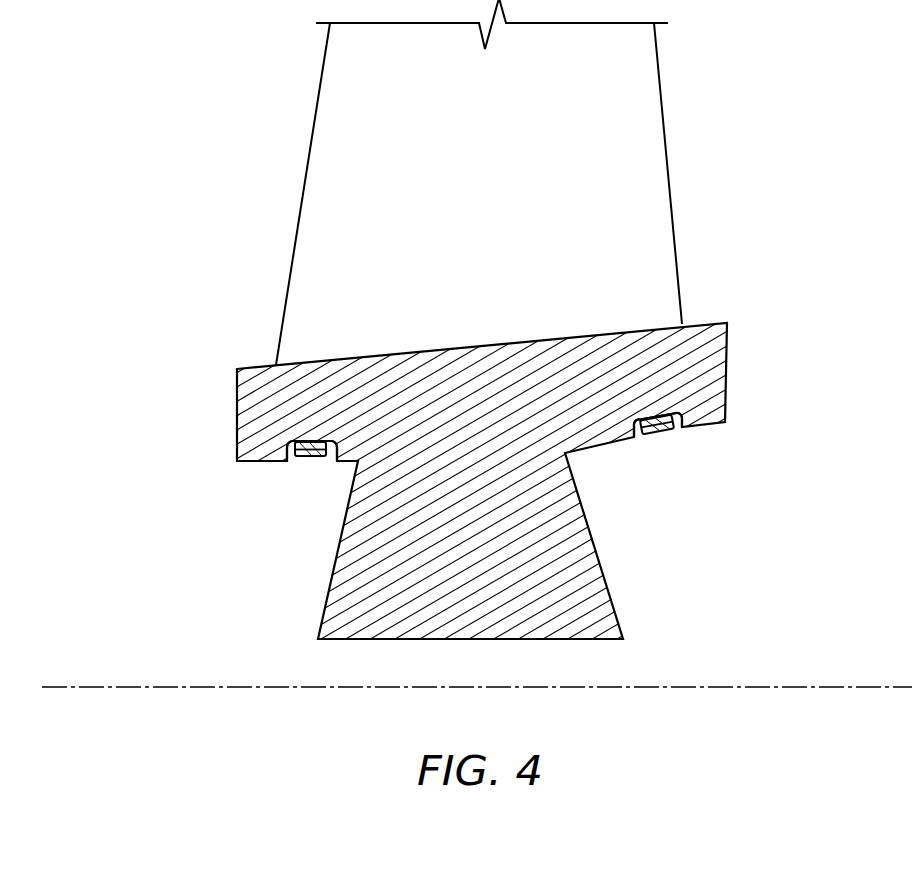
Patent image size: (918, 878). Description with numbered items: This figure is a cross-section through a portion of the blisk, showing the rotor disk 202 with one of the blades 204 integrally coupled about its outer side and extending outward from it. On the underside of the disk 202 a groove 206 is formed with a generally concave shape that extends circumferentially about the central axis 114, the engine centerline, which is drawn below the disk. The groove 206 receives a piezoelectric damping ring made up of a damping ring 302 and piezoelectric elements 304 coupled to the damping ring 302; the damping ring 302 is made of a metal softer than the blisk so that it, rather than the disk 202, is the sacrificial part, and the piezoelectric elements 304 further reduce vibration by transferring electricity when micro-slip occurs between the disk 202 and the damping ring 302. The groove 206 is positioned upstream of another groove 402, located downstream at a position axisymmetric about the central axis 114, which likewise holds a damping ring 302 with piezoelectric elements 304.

The central axis 114 is at (124, 681).
The rotor disk 202 is at (726, 368).
The blades 204 is at (670, 162).
The groove 206 is at (288, 467).
The damping ring 302 is at (311, 443).
The piezoelectric elements 304 is at (305, 458).
The groove 402 is at (682, 432).